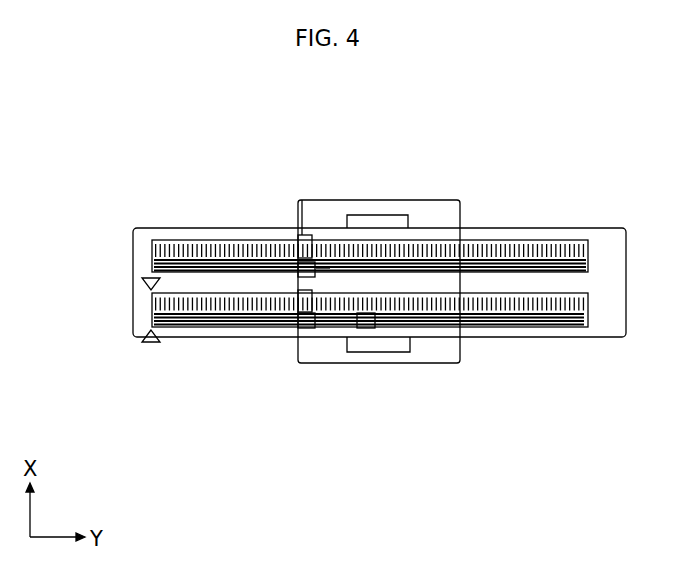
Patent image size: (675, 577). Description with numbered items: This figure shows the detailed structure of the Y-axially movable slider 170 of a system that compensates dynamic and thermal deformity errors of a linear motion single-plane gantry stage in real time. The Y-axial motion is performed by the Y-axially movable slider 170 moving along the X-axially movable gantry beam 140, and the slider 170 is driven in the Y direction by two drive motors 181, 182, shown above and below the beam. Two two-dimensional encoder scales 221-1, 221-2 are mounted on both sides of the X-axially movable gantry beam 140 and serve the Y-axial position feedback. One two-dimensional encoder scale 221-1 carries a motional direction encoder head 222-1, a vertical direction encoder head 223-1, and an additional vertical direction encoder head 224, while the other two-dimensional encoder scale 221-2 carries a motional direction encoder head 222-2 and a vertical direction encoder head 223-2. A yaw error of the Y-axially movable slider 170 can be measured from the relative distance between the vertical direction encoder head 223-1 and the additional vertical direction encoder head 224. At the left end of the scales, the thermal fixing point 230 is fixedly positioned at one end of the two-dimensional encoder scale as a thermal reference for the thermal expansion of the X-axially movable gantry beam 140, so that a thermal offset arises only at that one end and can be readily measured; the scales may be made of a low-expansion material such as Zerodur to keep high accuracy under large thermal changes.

The X-axially movable gantry beam 140 is at (160, 228).
The Y-axially movable slider 170 is at (460, 213).
The drive motor 181 is at (402, 223).
The drive motor 182 is at (398, 355).
The two-dimensional encoder scale 221-1 is at (512, 327).
The two-dimensional encoder scale 221-2 is at (238, 228).
The motional direction encoder head 222-1 is at (297, 300).
The motional direction encoder head 222-2 is at (300, 232).
The vertical direction encoder head 223-1 is at (302, 332).
The vertical direction encoder head 223-2 is at (375, 253).
The additional vertical direction encoder head 224 is at (363, 330).
The thermal fixing point 230 is at (154, 342).